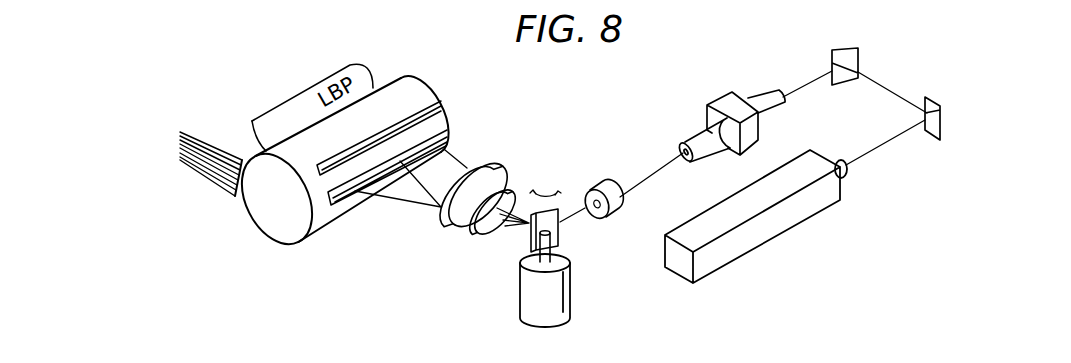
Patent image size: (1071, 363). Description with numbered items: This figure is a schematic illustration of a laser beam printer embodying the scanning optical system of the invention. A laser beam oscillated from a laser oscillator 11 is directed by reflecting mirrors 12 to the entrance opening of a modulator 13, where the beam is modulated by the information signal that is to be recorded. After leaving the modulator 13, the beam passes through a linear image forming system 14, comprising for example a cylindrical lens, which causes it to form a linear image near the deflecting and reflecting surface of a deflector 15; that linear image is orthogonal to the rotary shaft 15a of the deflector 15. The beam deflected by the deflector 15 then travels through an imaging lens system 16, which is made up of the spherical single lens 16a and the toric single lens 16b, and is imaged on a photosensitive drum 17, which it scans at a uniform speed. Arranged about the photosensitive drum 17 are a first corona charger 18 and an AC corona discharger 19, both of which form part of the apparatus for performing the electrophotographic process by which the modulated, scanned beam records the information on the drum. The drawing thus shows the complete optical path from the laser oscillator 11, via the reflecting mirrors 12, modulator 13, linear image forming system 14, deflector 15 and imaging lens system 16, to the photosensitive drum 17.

The laser oscillator 11 is at (773, 232).
The reflecting mirrors 12 is at (840, 50).
The modulator 13 is at (738, 95).
The linear image forming system 14 is at (602, 185).
The deflector 15 is at (558, 235).
The rotary shaft 15a is at (563, 263).
The imaging lens system 16 is at (538, 172).
The spherical single lens 16a is at (490, 236).
The toric single lens 16b is at (443, 228).
The photosensitive drum 17 is at (407, 78).
The first corona charger 18 is at (442, 102).
The AC corona discharger 19 is at (450, 130).